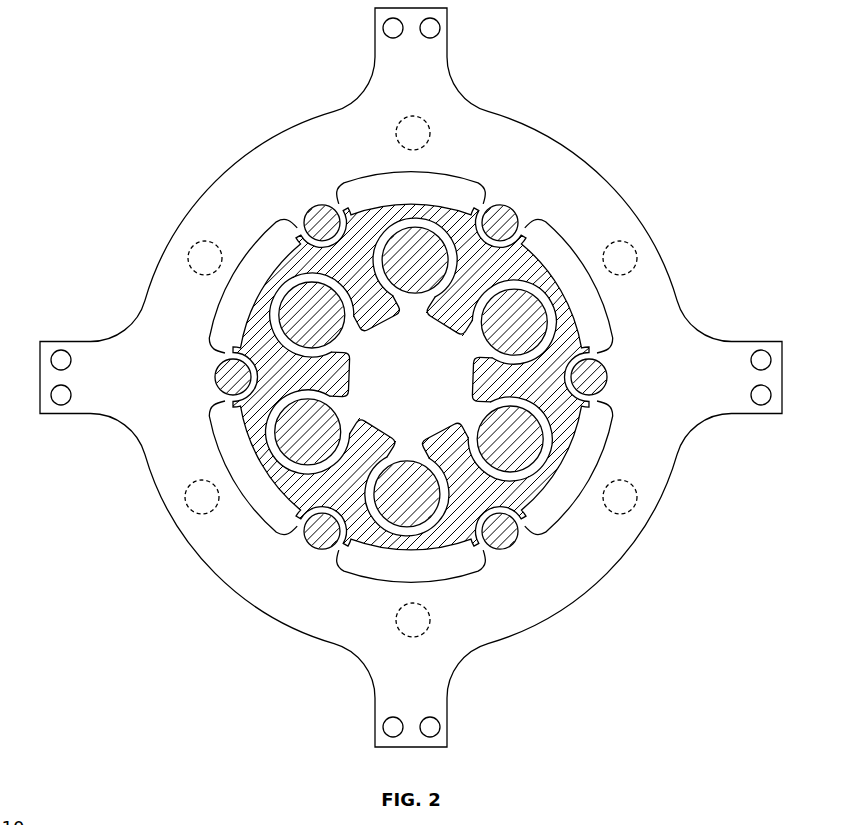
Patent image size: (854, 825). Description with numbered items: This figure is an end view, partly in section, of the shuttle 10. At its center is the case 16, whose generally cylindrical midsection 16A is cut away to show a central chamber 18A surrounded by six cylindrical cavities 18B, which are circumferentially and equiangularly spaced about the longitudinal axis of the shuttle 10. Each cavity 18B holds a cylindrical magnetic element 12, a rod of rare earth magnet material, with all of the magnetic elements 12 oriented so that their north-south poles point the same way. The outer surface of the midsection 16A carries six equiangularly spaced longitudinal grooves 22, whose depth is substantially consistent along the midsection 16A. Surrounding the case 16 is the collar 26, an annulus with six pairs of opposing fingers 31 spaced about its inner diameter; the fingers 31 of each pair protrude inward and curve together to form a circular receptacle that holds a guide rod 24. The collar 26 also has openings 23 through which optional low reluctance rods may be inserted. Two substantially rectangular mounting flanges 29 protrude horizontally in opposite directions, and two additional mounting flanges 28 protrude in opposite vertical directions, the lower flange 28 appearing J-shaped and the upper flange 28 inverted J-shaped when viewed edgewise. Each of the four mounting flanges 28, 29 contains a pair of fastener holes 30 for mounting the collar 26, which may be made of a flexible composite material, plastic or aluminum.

The shuttle 10 is at (482, 146).
The magnetic element 12 is at (411, 377).
The case 16 is at (411, 377).
The cylindrical midsection 16A is at (411, 377).
The central chamber 18A is at (411, 377).
The cylindrical cavities 18B is at (411, 377).
The longitudinal grooves 22 is at (358, 382).
The openings 23 is at (413, 130).
The guide rods 24 is at (413, 376).
The collar 26 is at (332, 621).
The mounting flanges 28 is at (437, 50).
The mounting flanges 29 is at (97, 350).
The fastener holes 30 is at (386, 32).
The fingers 31 is at (417, 377).